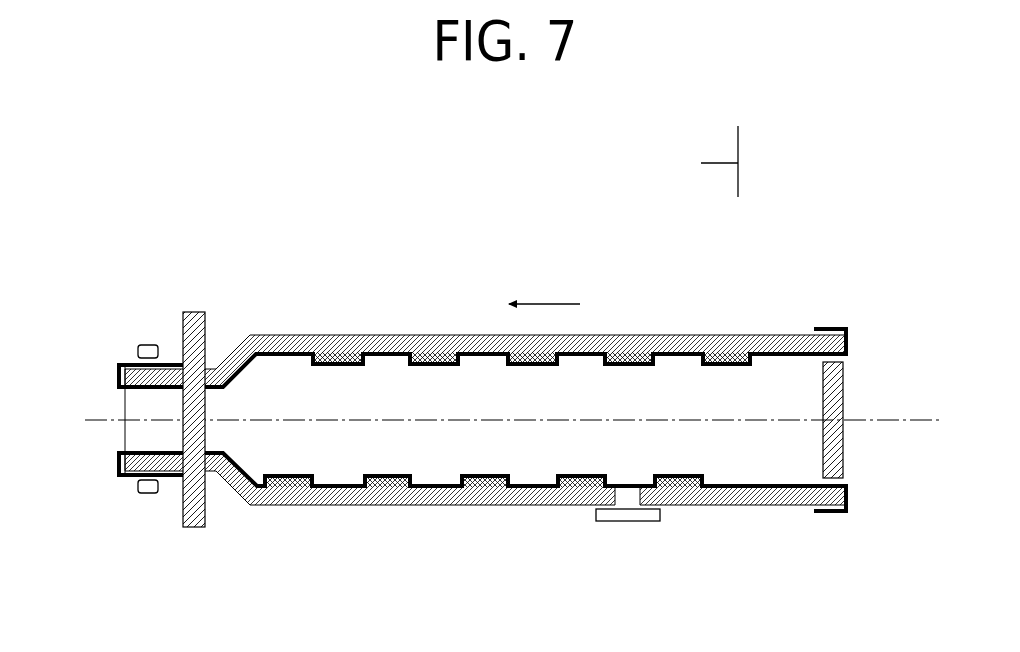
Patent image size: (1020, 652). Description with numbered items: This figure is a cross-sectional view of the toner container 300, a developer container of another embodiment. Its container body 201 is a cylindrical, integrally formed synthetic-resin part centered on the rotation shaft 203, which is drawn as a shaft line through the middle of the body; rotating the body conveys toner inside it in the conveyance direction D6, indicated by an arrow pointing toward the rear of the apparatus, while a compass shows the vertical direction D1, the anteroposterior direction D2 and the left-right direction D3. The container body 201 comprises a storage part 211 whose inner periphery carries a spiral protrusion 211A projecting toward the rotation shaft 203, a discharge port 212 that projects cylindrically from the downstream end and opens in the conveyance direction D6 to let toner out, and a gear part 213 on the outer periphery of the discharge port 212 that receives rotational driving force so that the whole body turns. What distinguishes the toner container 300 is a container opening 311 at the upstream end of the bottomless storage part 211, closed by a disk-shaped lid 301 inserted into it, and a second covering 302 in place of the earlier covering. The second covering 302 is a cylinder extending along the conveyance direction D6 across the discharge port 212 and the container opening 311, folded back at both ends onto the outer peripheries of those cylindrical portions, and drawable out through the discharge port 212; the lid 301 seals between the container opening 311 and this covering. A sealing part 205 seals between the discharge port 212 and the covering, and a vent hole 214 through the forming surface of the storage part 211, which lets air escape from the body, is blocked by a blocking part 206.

The toner container 300 is at (243, 183).
The container body 201 is at (365, 282).
The rotation shaft 203 is at (908, 418).
The sealing part 205 is at (148, 345).
The blocking part 206 is at (620, 523).
The storage part 211 is at (423, 527).
The protrusion 211A is at (383, 477).
The discharge port 212 is at (161, 521).
The gear part 213 is at (192, 305).
The vent hole 214 is at (630, 491).
The lid 301 is at (822, 372).
The second covering 302 is at (497, 358).
The container opening 311 is at (842, 430).
The vertical direction D1 is at (742, 152).
The anteroposterior direction D2 is at (748, 170).
The left-right direction D3 is at (733, 170).
The conveyance direction D6 is at (550, 303).